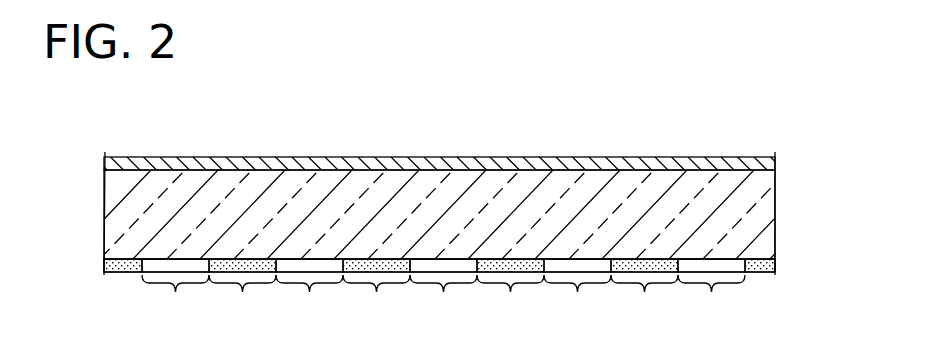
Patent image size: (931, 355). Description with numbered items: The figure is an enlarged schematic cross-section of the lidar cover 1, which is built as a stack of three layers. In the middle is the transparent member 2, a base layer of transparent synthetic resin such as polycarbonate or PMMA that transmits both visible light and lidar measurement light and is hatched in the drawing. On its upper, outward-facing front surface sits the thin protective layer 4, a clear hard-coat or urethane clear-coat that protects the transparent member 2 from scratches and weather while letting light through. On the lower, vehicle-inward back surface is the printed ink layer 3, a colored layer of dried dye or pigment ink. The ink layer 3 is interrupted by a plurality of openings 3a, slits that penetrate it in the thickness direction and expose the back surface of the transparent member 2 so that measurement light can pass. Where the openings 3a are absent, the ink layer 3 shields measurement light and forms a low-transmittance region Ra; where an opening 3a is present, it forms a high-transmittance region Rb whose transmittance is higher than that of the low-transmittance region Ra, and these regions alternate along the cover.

The lidar cover 1 is at (804, 156).
The transparent member 2 is at (768, 206).
The ink layer 3 is at (783, 266).
The opening 3a is at (142, 263).
The protective layer 4 is at (489, 167).
The low-transmittance region Ra is at (443, 302).
The high-transmittance region Rb is at (443, 302).